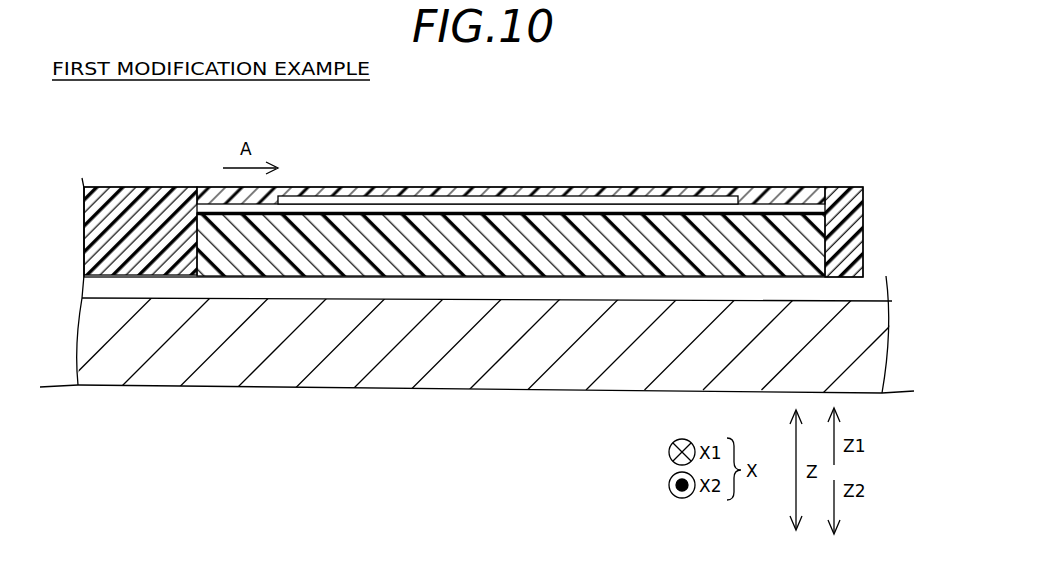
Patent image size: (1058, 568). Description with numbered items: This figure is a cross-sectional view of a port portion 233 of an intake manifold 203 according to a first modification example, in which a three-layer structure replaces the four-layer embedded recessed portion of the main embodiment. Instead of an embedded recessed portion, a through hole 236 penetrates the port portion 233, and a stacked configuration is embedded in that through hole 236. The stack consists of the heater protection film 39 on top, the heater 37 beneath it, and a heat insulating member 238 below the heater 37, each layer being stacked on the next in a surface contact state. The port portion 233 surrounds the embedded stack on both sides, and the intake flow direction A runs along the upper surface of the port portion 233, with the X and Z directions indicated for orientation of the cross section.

The heater 37 is at (576, 196).
The heater protection film 39 is at (400, 192).
The intake manifold 203 is at (492, 165).
The port portion 233 is at (830, 171).
The through hole 236 is at (740, 184).
The heat insulating member 238 is at (650, 212).